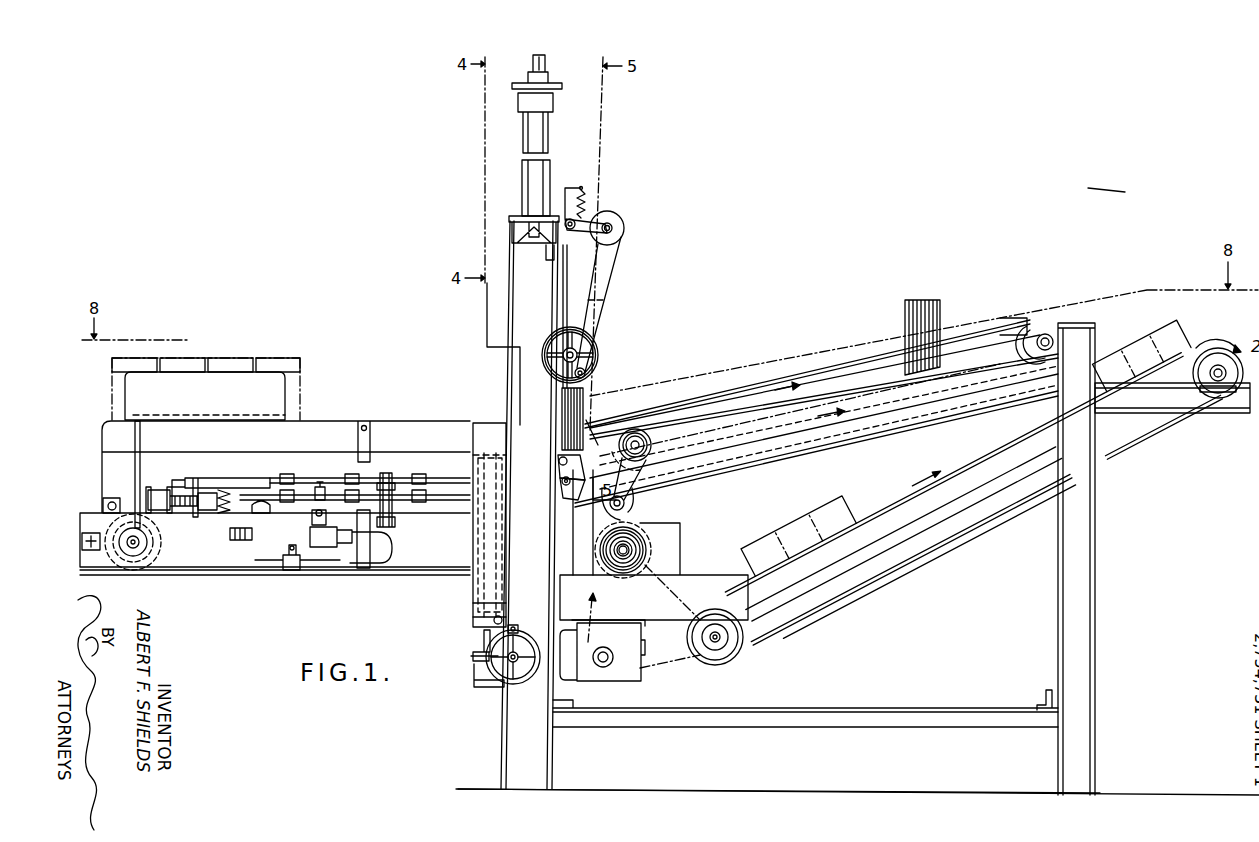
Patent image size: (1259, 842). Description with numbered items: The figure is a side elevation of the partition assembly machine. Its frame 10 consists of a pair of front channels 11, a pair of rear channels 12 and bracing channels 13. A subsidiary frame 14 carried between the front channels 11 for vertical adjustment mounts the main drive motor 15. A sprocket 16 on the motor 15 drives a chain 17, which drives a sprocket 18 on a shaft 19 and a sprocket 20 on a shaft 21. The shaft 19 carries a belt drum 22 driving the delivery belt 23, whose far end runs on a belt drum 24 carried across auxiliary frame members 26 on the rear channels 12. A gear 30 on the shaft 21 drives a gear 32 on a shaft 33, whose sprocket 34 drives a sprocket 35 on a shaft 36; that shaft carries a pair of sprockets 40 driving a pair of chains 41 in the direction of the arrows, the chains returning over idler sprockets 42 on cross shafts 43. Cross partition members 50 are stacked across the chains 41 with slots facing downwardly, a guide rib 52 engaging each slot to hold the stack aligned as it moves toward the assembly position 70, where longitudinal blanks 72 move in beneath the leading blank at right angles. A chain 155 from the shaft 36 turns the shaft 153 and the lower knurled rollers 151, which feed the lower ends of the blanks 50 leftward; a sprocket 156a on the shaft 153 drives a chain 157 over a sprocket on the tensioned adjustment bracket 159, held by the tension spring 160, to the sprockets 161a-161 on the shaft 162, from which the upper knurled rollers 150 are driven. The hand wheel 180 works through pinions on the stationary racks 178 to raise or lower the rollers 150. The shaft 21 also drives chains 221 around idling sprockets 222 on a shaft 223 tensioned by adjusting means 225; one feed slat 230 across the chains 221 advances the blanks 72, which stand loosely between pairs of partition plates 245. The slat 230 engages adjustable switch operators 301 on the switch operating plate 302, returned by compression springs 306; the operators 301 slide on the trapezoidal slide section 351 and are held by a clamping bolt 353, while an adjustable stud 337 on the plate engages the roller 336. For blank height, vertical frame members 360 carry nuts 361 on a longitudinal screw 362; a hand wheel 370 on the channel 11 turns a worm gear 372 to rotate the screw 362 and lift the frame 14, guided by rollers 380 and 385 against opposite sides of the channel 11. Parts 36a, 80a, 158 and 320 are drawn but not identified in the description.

The frame 10 is at (786, 731).
The front channels 11 is at (540, 766).
The rear channels 12 is at (1078, 762).
The bracing channels 13 is at (720, 720).
The subsidiary frame 14 is at (702, 585).
The main drive motor 15 is at (606, 681).
The sprocket 16 is at (597, 667).
The chain 17 is at (670, 663).
The sprocket 18 is at (723, 657).
The shaft 19 is at (713, 642).
The sprocket 20 is at (630, 548).
The shaft 21 is at (627, 553).
The belt drum 22 is at (743, 651).
The delivery belt 23 is at (947, 550).
The belt drum 24 is at (1217, 357).
The auxiliary frame members 26 is at (1233, 412).
The gear 30 is at (637, 556).
The gear 32 is at (633, 502).
The shaft 33 is at (588, 545).
The sprocket 34 is at (627, 505).
The sprocket 35 is at (628, 427).
The shaft 36 is at (647, 432).
The lower rail 36a is at (642, 477).
The sprockets 40 is at (639, 448).
The chains 41 is at (873, 396).
The idler sprockets 42 is at (1038, 330).
The cross shafts 43 is at (1047, 334).
The cross partition members 50 is at (922, 307).
The guide rib 52 is at (980, 340).
The assembly position 70 is at (540, 405).
The longitudinal blanks 72 is at (246, 360).
The column 80a is at (506, 282).
The upper knurled rollers 150 is at (557, 380).
The knurled rollers 151 is at (560, 476).
The shaft 153 is at (573, 447).
The chain 155 is at (592, 437).
The sprocket 156a is at (558, 460).
The chain 157 is at (620, 258).
The pulley 158 is at (619, 216).
The tensioned adjustment bracket 159 is at (583, 238).
The tension spring 160 is at (587, 198).
The sprockets 161a-161 is at (586, 380).
The shaft 162 is at (592, 388).
The stationary racks 178 is at (604, 300).
The hand wheel 180 is at (596, 346).
The chains 221 is at (417, 570).
The idling sprockets 222 is at (141, 570).
The shaft 223 is at (132, 547).
The adjusting means 225 is at (90, 563).
The feed slat 230 is at (253, 497).
The partition plates 245 is at (283, 387).
The adjustable switch operators 301 is at (288, 475).
The switch operating plate 302 is at (225, 480).
The compression springs 306 is at (223, 503).
The valve 320 is at (333, 548).
The roller 336 is at (312, 520).
The adjustable stud 337 is at (318, 485).
The slide section 351 is at (205, 478).
The clamping bolt 353 is at (655, 440).
The vertical frame members 360 is at (472, 536).
The nuts 361 is at (473, 617).
The longitudinal screw 362 is at (506, 546).
The hand wheel 370 is at (522, 685).
The worm gear 372 is at (471, 658).
The rollers 380 is at (501, 618).
The rollers 385 is at (565, 484).